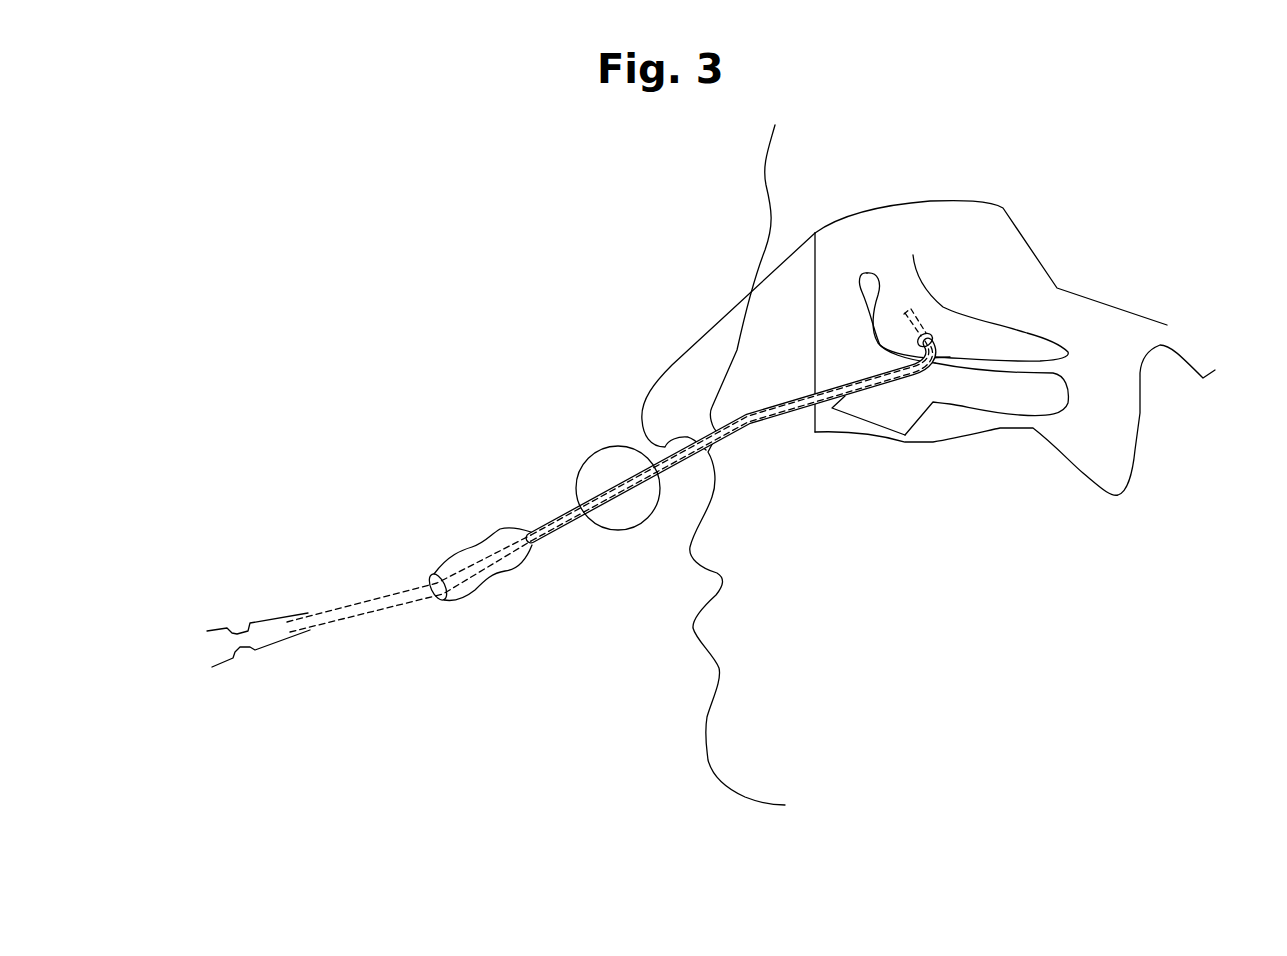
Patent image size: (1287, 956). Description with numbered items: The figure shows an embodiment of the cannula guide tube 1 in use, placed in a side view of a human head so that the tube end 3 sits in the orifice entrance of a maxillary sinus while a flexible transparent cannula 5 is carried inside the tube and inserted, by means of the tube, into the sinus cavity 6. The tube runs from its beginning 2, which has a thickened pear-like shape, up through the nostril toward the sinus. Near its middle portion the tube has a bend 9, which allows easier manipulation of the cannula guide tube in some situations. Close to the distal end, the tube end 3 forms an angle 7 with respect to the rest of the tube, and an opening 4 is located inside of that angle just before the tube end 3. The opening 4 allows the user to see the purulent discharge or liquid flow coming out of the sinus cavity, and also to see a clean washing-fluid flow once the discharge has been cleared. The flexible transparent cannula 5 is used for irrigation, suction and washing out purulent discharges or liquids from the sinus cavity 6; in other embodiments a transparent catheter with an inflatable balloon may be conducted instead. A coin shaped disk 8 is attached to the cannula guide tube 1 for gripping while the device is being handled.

The cannula guide tube 1 is at (705, 475).
The tube beginning 2 is at (457, 598).
The tube end 3 is at (934, 336).
The opening 4 is at (920, 360).
The flexible transparent cannula 5 is at (355, 607).
The sinus cavity 6 is at (898, 282).
The angle 7 is at (933, 376).
The coin shaped disk 8 is at (597, 462).
The bend 9 is at (755, 426).